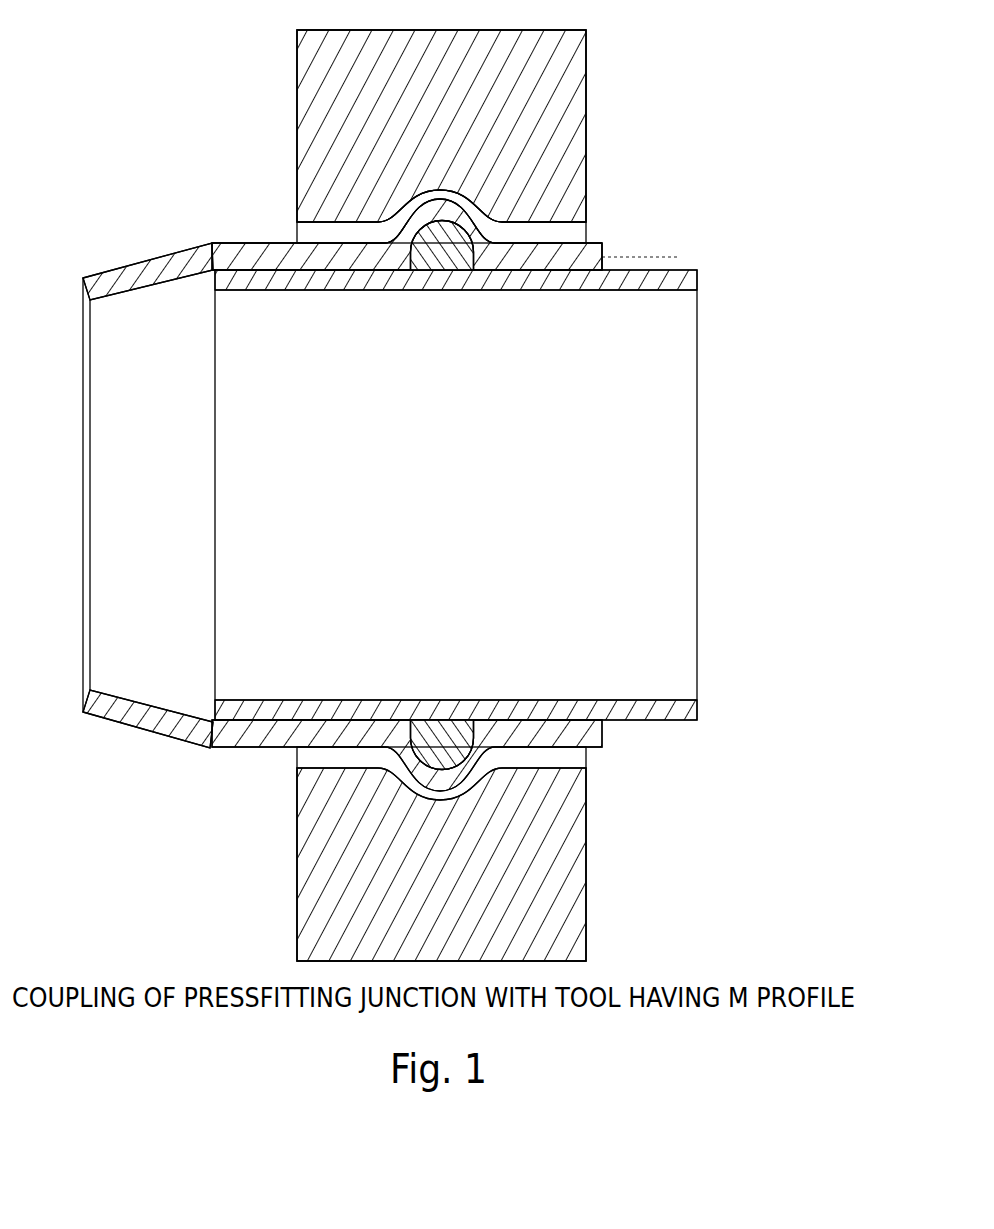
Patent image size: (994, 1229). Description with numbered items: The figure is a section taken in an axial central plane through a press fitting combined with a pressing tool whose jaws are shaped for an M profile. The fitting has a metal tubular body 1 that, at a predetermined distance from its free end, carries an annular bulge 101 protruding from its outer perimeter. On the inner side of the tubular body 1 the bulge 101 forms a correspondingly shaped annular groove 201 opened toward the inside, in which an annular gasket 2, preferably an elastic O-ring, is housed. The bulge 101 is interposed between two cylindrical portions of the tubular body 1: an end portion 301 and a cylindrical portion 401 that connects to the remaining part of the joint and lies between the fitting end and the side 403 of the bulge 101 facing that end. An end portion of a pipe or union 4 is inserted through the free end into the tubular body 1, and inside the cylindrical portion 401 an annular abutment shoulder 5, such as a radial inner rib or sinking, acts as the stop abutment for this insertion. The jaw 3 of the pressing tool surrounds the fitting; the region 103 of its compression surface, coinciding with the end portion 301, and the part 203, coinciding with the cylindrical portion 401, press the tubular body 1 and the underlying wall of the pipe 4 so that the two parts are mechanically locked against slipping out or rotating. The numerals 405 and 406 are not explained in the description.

The tubular body 1 is at (606, 240).
The annular gasket 2 is at (476, 236).
The jaw 3 is at (589, 137).
The pipe or union 4 is at (700, 313).
The annular abutment shoulder 5 is at (208, 272).
The annular bulge 101 is at (432, 206).
The region of the compression surface of the jaw 103 is at (328, 219).
The annular groove 201 is at (443, 224).
The part of the jaw 203 is at (537, 224).
The end portion 301 is at (305, 255).
The cylindrical portion 401 is at (575, 258).
The side of the annular bulge 403 is at (522, 222).
The fitting wall contact surface 405 is at (558, 243).
The fitting wall outer surface 406 is at (337, 242).